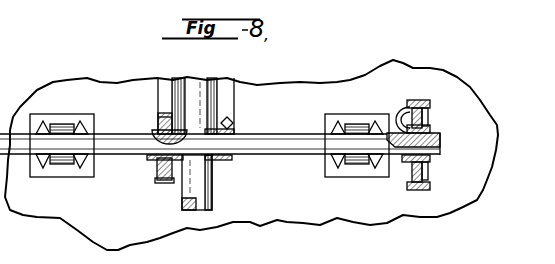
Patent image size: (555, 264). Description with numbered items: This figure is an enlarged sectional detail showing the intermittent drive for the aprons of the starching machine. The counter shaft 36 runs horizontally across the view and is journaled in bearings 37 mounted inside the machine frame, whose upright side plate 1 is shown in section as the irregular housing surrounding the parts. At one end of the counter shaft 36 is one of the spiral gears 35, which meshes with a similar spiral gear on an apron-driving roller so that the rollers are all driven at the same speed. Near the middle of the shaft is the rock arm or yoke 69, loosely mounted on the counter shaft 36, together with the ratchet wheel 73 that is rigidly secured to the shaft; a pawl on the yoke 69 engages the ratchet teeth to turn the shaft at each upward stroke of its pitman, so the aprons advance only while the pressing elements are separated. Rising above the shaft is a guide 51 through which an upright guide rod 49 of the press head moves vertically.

The upright side plate 1 is at (483, 121).
The spiral gear 35 is at (430, 183).
The counter shaft 36 is at (273, 155).
The bearing 37 is at (70, 130).
The guide rod 49 is at (208, 193).
The guide 51 is at (197, 88).
The rock arm or yoke 69 is at (213, 160).
The ratchet wheel 73 is at (167, 183).